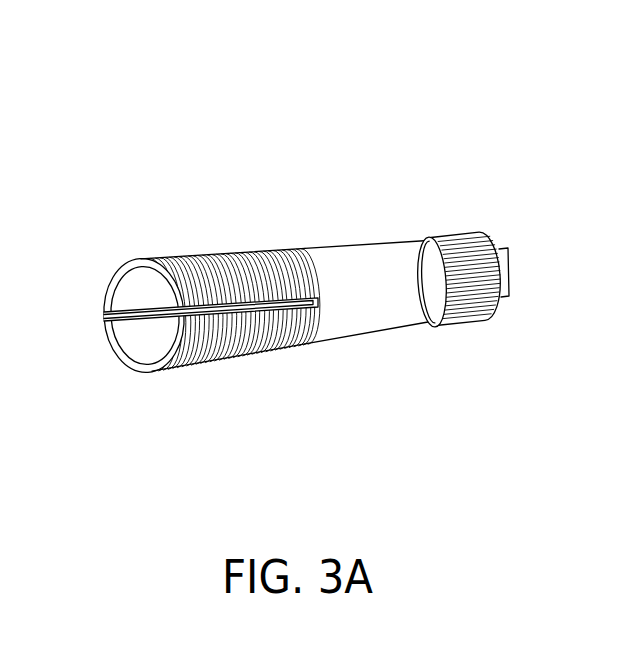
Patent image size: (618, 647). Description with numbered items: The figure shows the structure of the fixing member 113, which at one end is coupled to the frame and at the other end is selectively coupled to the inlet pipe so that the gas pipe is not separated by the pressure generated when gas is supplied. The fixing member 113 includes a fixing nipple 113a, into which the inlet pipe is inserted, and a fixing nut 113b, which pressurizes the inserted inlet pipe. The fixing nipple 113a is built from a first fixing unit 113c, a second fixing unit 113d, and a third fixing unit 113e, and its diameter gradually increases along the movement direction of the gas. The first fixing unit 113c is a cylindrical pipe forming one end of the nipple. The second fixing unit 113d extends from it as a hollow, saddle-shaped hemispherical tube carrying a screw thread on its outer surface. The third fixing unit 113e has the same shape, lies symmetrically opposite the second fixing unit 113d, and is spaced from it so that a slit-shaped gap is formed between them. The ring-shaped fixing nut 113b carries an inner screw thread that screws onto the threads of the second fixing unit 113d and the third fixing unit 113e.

The fixing member 113 is at (60, 48).
The fixing nipple 113a is at (390, 242).
The fixing nut 113b is at (455, 237).
The first fixing unit 113c is at (325, 258).
The second fixing unit 113d is at (232, 253).
The third fixing unit 113e is at (235, 357).